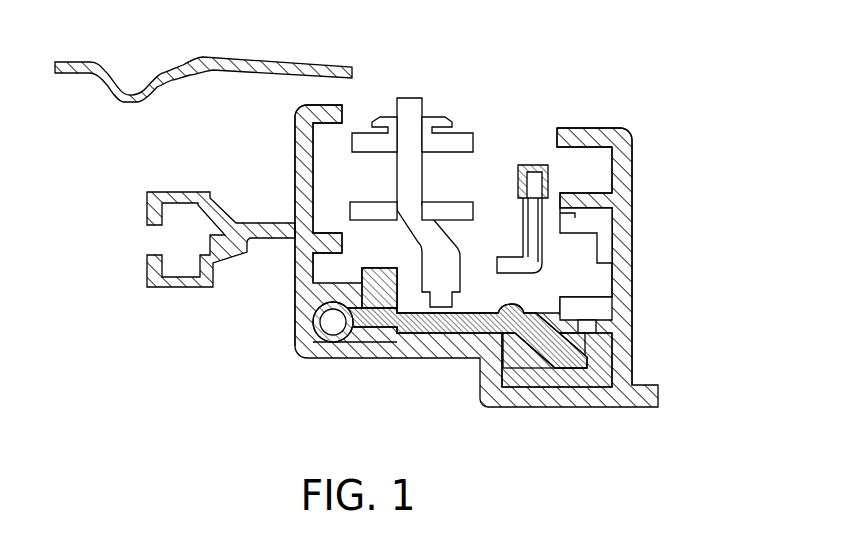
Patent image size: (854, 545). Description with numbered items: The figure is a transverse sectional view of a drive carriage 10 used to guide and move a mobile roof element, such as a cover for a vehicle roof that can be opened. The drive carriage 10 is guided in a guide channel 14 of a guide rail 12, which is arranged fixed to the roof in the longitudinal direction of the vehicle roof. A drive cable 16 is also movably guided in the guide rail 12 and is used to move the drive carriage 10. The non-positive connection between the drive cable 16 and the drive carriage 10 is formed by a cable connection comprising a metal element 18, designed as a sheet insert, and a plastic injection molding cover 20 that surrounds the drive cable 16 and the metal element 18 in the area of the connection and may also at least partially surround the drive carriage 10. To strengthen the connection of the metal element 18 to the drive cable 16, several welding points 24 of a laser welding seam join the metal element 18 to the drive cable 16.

The drive carriage 10 is at (567, 375).
The guide rail 12 is at (598, 130).
The guide channel 14 is at (632, 350).
The drive cable 16 is at (316, 348).
The metal element 18 is at (414, 345).
The plastic injection molding cover 20 is at (296, 316).
The welding points 24 is at (345, 350).